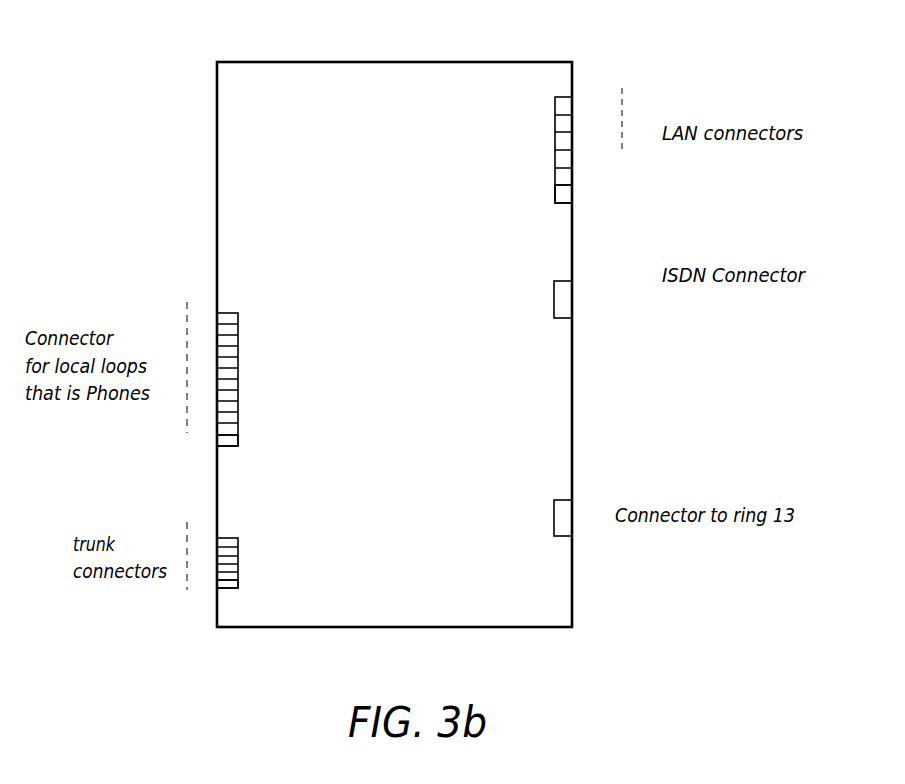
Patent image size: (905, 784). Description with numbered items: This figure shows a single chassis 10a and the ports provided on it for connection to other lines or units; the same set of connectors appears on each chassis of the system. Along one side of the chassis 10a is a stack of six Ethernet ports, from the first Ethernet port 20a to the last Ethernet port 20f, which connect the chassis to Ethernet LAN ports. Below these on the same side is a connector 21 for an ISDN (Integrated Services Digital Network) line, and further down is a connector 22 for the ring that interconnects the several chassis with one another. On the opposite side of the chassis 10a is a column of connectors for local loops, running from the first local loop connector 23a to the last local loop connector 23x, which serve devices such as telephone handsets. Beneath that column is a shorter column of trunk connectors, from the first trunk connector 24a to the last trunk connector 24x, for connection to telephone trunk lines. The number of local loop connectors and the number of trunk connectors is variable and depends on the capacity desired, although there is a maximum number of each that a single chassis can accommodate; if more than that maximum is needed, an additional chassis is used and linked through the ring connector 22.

The housing / chassis 10a is at (308, 61).
The Ethernet port 20a is at (572, 106).
The Ethernet port 20f is at (572, 197).
The ISDN connector 21 is at (572, 312).
The ring connector 22 is at (572, 506).
The local loop connector 23a is at (217, 318).
The local loop connector 23x is at (217, 425).
The trunk line connector 24a is at (217, 541).
The trunk line connector 24x is at (217, 583).